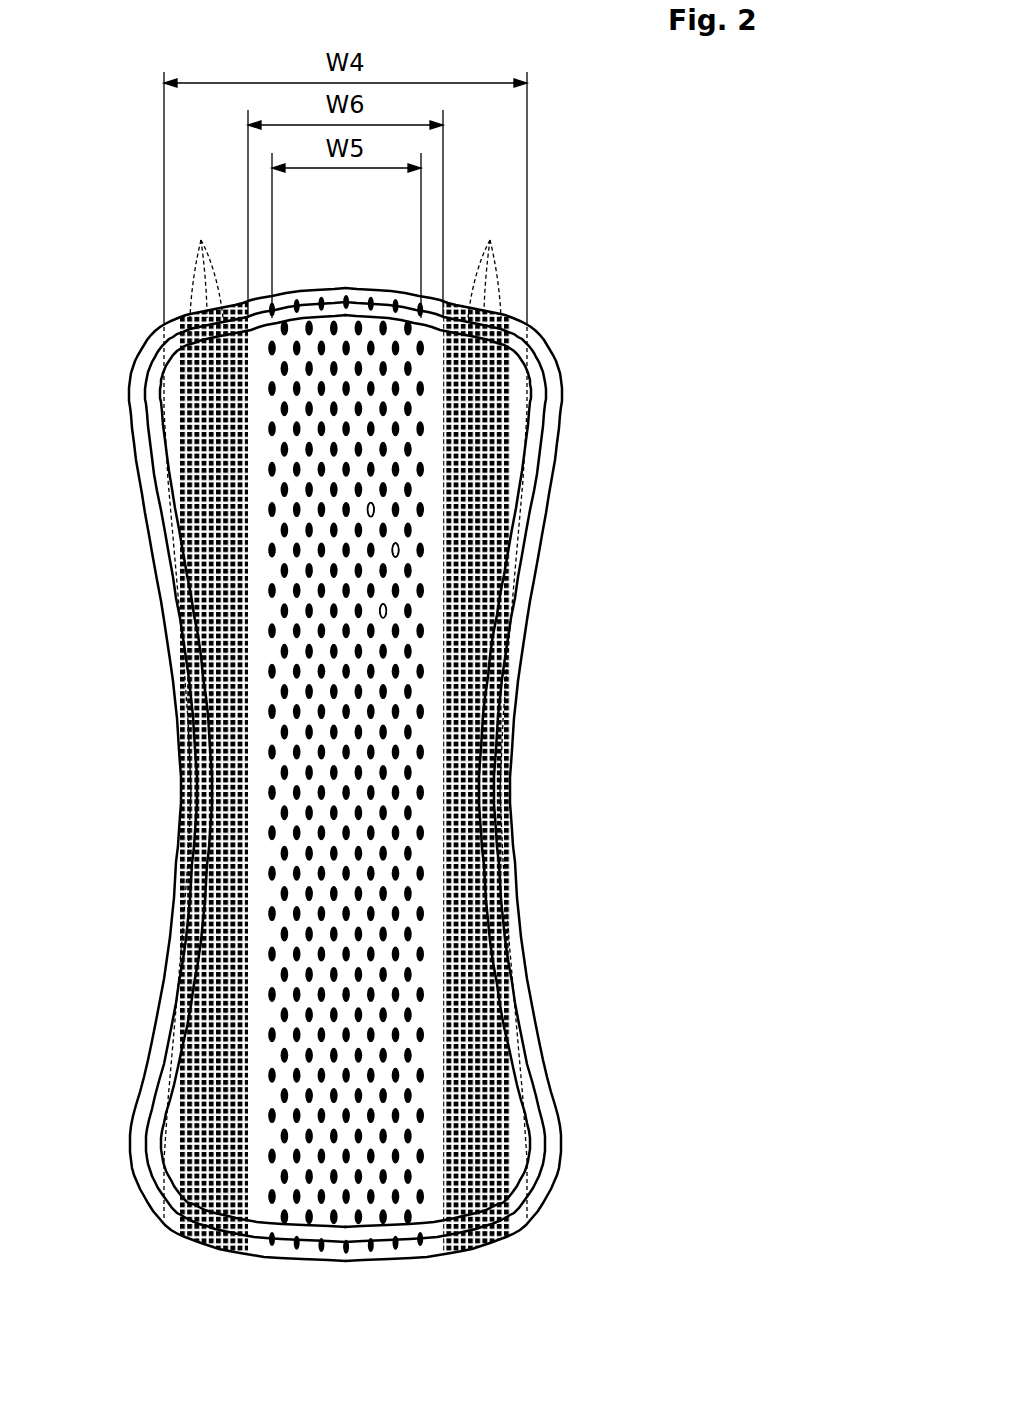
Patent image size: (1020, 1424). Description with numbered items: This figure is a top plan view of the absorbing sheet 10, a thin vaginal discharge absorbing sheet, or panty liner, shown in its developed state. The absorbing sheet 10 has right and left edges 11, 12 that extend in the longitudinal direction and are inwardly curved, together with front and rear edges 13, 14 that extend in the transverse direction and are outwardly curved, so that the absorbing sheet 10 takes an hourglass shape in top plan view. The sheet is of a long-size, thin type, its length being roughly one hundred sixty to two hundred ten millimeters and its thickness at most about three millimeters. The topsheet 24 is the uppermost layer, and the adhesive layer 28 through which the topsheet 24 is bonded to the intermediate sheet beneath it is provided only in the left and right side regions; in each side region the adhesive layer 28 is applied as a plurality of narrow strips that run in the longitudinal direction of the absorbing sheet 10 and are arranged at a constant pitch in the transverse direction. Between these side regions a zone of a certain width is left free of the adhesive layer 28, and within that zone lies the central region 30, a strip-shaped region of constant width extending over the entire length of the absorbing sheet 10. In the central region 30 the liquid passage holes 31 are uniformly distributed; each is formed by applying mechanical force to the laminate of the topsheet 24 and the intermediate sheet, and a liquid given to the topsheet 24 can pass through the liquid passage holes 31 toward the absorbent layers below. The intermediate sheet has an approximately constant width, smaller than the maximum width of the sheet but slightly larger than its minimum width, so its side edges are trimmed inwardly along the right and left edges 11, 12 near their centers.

The absorbing sheet 10 is at (528, 778).
The right edge 11 is at (513, 695).
The left edge 12 is at (176, 717).
The front edge 13 is at (368, 288).
The rear edge 14 is at (397, 1262).
The topsheet 24 is at (433, 650).
The adhesive layer 28 is at (345, 717).
The central region 30 is at (425, 414).
The liquid passage holes 31 is at (362, 509).